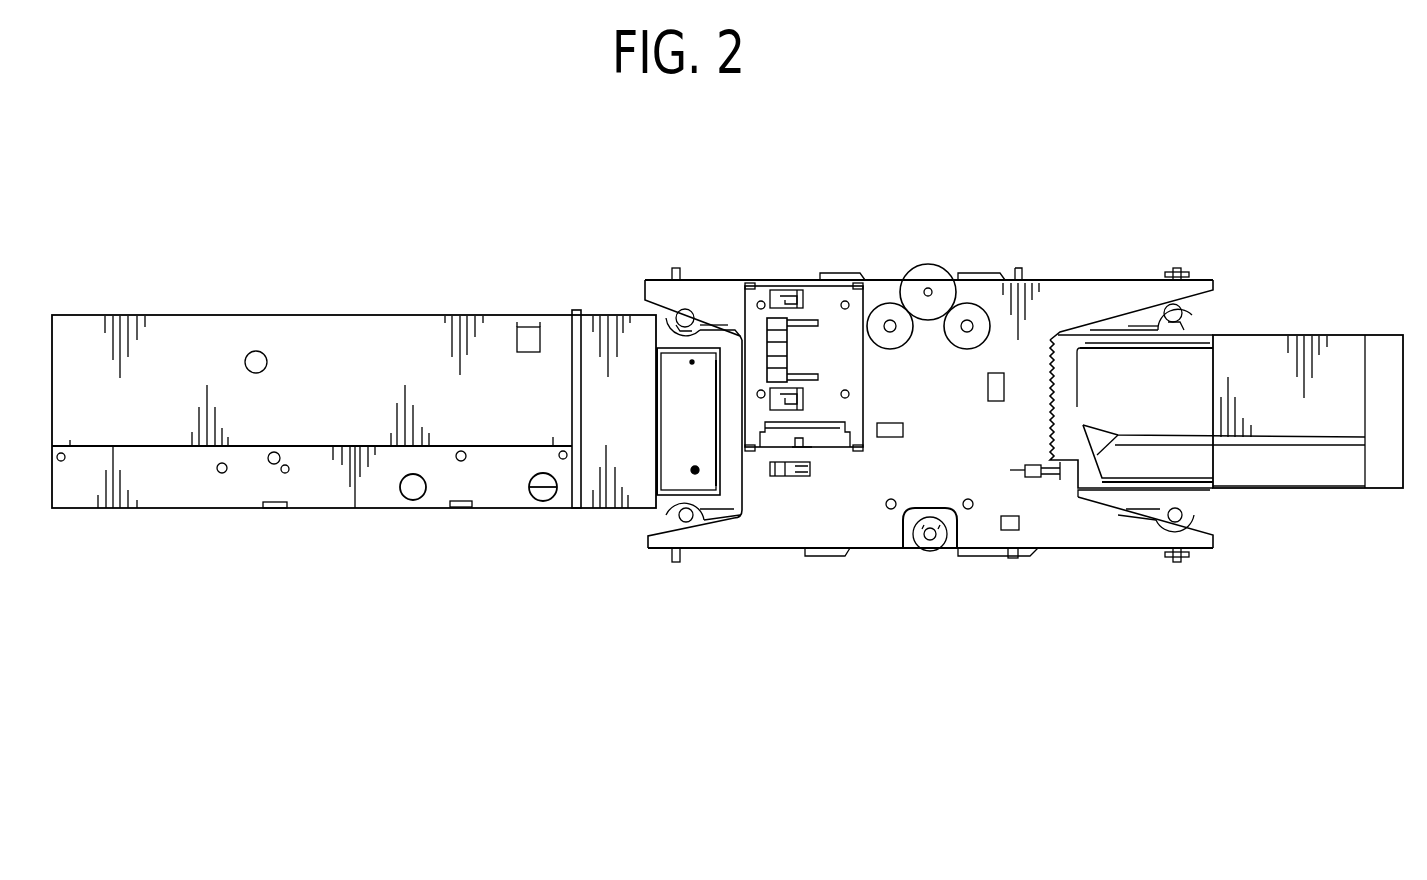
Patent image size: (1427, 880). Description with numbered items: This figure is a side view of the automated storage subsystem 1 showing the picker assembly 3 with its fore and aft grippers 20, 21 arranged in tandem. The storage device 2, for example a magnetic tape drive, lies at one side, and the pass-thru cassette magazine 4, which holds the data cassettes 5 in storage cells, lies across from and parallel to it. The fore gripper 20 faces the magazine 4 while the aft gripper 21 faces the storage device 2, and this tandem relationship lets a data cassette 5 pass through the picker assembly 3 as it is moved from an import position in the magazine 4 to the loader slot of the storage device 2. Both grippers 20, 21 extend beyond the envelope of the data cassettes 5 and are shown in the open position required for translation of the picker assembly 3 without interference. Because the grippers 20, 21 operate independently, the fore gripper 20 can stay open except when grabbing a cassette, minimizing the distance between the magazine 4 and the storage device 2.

The automated storage subsystem 1 is at (1240, 172).
The storage device 2 is at (342, 333).
The picker assembly 3 is at (1100, 290).
The pass-thru cassette magazine 4 is at (1330, 483).
The data cassette 5 is at (683, 430).
The fore gripper 20 is at (1262, 279).
The aft gripper 21 is at (606, 275).